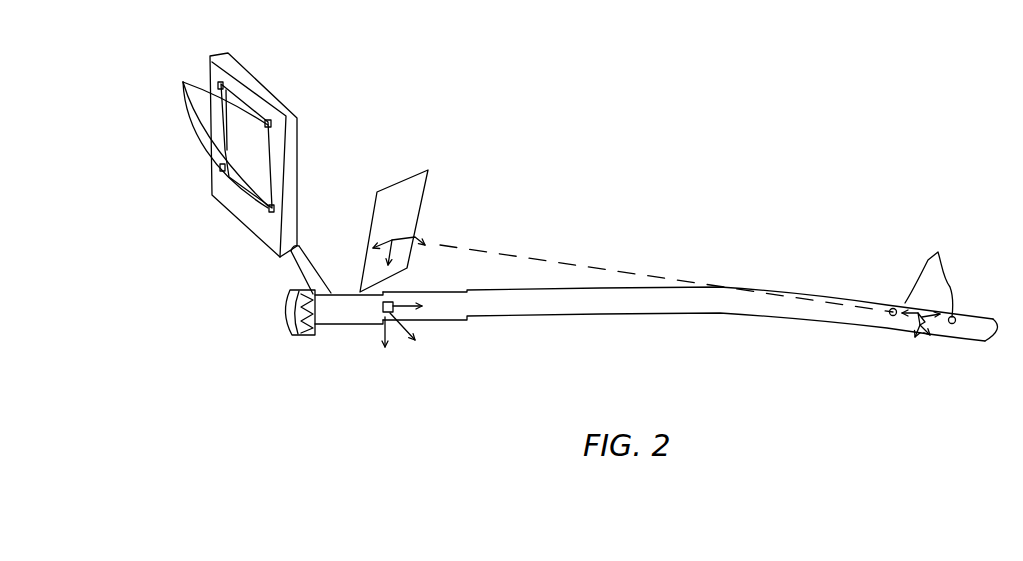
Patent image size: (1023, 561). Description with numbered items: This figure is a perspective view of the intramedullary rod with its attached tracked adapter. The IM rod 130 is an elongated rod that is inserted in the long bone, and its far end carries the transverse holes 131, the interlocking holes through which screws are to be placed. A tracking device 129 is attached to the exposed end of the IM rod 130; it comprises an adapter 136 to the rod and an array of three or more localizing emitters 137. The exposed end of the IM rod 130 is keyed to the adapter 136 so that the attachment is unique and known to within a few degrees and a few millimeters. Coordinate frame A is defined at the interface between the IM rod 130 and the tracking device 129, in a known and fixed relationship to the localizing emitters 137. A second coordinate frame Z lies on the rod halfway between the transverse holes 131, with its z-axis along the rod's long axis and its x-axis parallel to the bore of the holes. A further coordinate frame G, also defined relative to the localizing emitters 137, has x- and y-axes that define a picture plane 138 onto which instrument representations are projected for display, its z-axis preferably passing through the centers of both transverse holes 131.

The tracking device 129 is at (232, 290).
The IM rod 130 is at (565, 318).
The transverse holes 131 is at (923, 309).
The adapter 136 is at (333, 327).
The localizing emitters 137 is at (222, 155).
The picture plane 138 is at (428, 170).